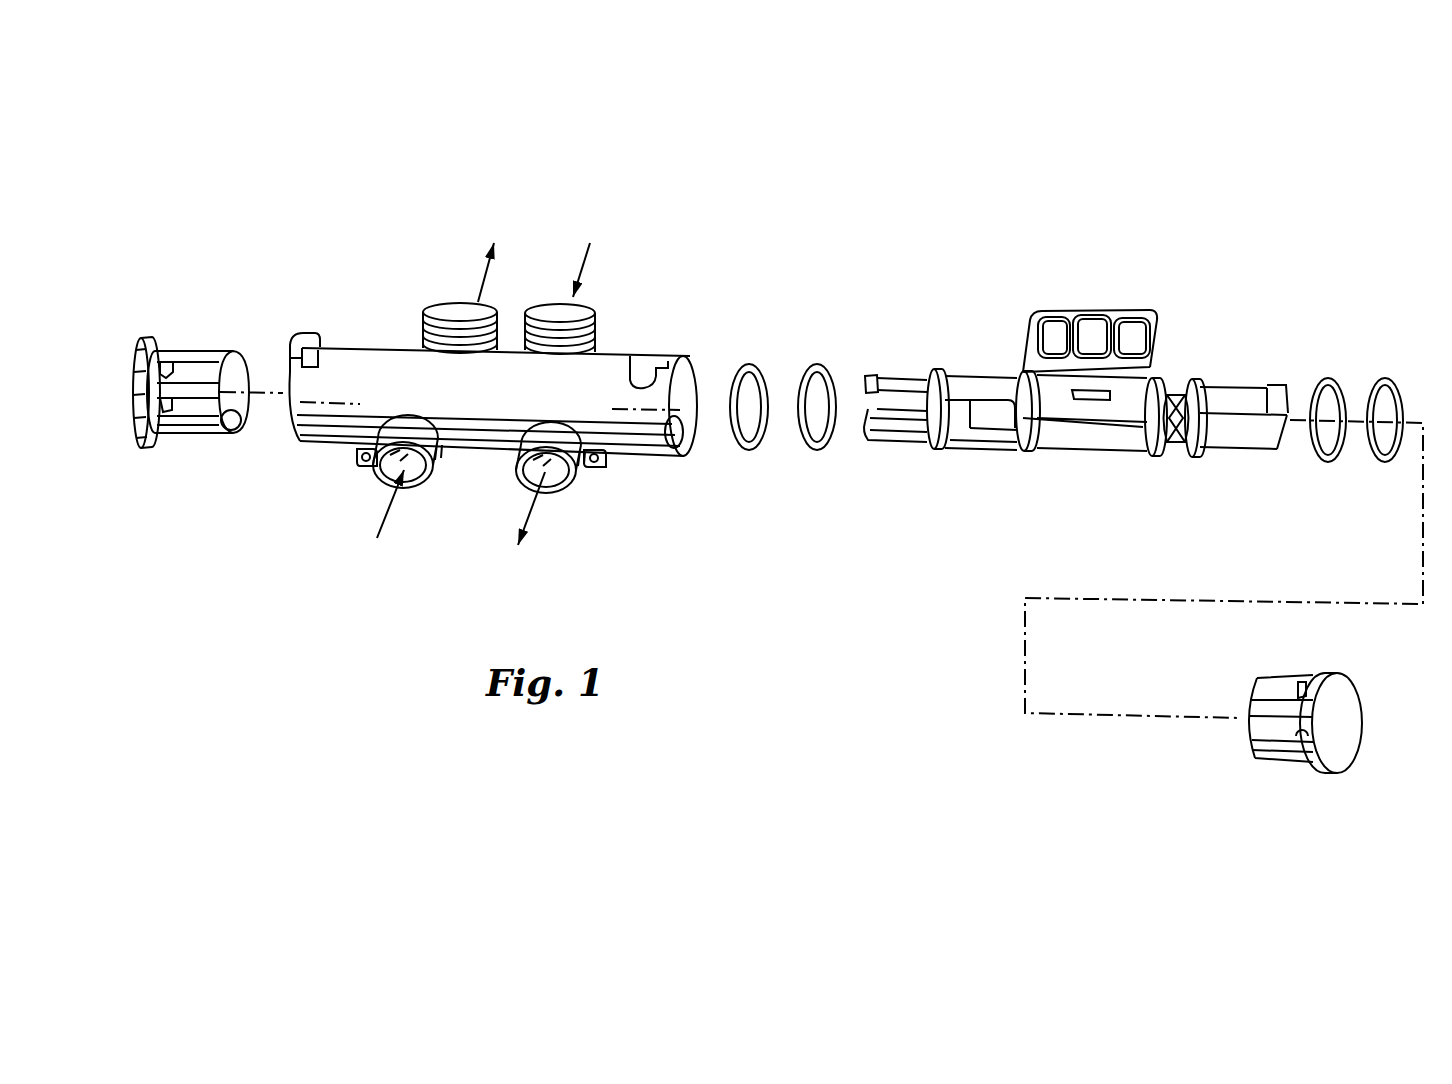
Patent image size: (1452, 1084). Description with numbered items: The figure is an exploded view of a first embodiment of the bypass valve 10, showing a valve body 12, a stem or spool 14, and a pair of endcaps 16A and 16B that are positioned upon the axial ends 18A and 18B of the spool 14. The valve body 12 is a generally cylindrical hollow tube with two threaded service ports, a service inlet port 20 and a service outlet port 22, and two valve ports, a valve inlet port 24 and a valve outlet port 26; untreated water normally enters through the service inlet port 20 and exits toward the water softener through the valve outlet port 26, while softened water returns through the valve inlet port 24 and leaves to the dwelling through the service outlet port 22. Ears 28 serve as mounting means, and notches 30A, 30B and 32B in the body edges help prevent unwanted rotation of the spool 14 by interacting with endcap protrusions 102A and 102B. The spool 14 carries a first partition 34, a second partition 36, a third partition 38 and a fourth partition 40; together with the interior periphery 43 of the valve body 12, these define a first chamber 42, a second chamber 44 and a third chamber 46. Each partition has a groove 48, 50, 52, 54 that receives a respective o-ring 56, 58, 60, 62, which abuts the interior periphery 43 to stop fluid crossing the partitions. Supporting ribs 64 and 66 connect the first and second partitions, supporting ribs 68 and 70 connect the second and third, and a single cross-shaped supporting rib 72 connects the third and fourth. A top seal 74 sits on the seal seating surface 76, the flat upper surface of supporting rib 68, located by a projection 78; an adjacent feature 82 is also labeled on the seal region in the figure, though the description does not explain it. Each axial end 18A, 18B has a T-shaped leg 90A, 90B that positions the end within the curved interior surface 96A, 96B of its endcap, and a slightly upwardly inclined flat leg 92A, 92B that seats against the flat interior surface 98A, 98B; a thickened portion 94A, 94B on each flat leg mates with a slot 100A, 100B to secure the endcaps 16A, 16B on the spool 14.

The bypass valve 10 is at (1193, 265).
The valve body 12 is at (506, 426).
The spool 14 is at (1182, 407).
The endcap 16A is at (220, 386).
The endcap 16B is at (1312, 695).
The axial end 18A is at (912, 412).
The axial end 18B is at (1300, 447).
The service inlet port 20 is at (581, 309).
The service outlet port 22 is at (463, 305).
The valve inlet port 24 is at (396, 486).
The valve outlet port 26 is at (548, 482).
The ears 28 is at (360, 462).
The notch 30A is at (318, 340).
The notch 30B is at (656, 366).
The notch 32B is at (694, 362).
The first partition 34 is at (946, 428).
The second partition 36 is at (1060, 446).
The third partition 38 is at (1174, 452).
The fourth partition 40 is at (1216, 446).
The first chamber 42 is at (1000, 410).
The interior periphery 43 is at (684, 450).
The second chamber 44 is at (1176, 394).
The third chamber 46 is at (1181, 396).
The groove 48 is at (938, 378).
The groove 50 is at (1027, 380).
The groove 52 is at (1161, 386).
The groove 54 is at (1202, 386).
The o-ring 56 is at (749, 451).
The o-ring 58 is at (817, 451).
The o-ring 60 is at (1326, 463).
The o-ring 62 is at (1385, 463).
The supporting rib 64 is at (988, 376).
The supporting rib 66 is at (985, 440).
The supporting rib 68 is at (1150, 356).
The supporting rib 70 is at (1110, 442).
The supporting rib 72 is at (1176, 450).
The top seal 74 is at (1101, 316).
The seal seating surface 76 is at (1046, 437).
The projection 78 is at (1093, 402).
The handle rib 82 is at (1052, 324).
The T-shaped leg 90A is at (888, 430).
The T-shaped leg 90B is at (1256, 449).
The flat leg 92A is at (893, 378).
The flat leg 92B is at (1261, 394).
The thickened portion 94A is at (866, 382).
The thickened portion 94B is at (1281, 401).
The curved interior surface 96A is at (234, 430).
The curved interior surface 96B is at (1257, 738).
The flat interior surface 98A is at (238, 360).
The flat interior surface 98B is at (1253, 690).
The slot 100A is at (170, 442).
The slot 100B is at (1355, 728).
The endcap protrusion 102A is at (158, 345).
The endcap protrusion 102B is at (1309, 686).